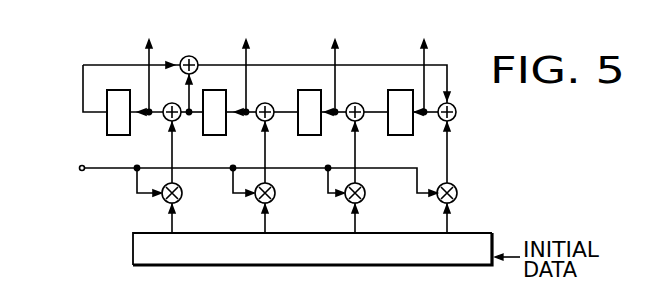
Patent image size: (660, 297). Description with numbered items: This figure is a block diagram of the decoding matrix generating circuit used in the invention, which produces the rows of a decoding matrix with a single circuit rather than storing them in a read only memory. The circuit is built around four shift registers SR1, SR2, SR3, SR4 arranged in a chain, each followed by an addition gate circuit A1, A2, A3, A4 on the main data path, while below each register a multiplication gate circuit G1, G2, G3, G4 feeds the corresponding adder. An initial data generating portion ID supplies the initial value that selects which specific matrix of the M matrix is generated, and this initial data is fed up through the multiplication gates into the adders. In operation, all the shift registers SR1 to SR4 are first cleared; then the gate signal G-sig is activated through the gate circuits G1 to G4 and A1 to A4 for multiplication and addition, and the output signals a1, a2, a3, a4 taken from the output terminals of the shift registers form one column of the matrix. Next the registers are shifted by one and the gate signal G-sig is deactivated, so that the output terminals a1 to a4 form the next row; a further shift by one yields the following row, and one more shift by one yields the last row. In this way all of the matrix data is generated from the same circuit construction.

The shift register SR1 is at (117, 101).
The shift register SR2 is at (221, 101).
The shift register SR3 is at (308, 101).
The shift register SR4 is at (398, 101).
The gate circuit for addition A1 is at (182, 127).
The gate circuit for addition A2 is at (275, 127).
The gate circuit for addition A3 is at (366, 127).
The gate circuit for addition A4 is at (457, 127).
The gate circuit for multiplication G1 is at (182, 203).
The gate circuit for multiplication G2 is at (276, 203).
The gate circuit for multiplication G3 is at (366, 203).
The gate circuit for multiplication G4 is at (458, 203).
The output signal a1 is at (148, 26).
The output signal a2 is at (244, 26).
The output signal a3 is at (333, 26).
The output signal a4 is at (423, 26).
The gate signal G-sig is at (246, 181).
The initial data generating portion ID is at (172, 265).